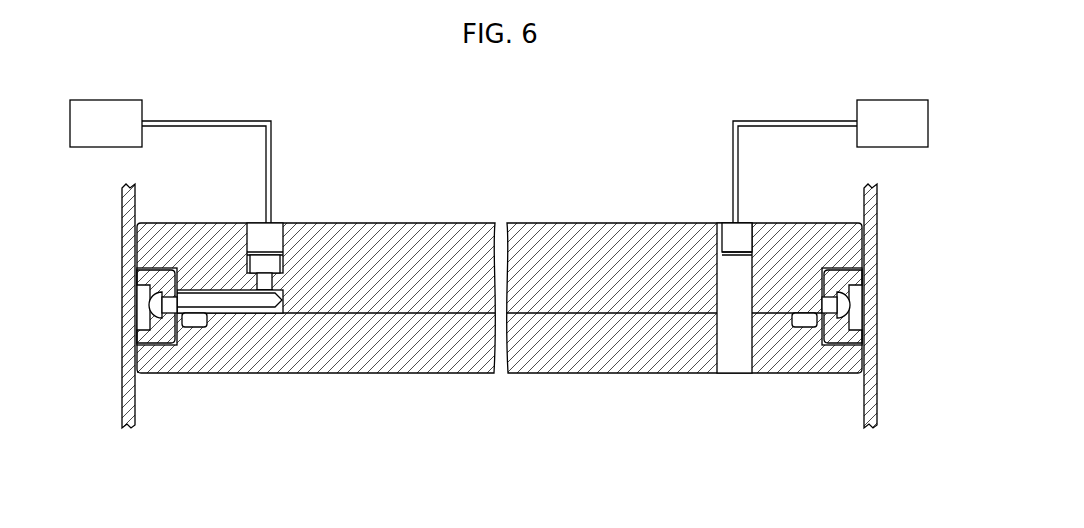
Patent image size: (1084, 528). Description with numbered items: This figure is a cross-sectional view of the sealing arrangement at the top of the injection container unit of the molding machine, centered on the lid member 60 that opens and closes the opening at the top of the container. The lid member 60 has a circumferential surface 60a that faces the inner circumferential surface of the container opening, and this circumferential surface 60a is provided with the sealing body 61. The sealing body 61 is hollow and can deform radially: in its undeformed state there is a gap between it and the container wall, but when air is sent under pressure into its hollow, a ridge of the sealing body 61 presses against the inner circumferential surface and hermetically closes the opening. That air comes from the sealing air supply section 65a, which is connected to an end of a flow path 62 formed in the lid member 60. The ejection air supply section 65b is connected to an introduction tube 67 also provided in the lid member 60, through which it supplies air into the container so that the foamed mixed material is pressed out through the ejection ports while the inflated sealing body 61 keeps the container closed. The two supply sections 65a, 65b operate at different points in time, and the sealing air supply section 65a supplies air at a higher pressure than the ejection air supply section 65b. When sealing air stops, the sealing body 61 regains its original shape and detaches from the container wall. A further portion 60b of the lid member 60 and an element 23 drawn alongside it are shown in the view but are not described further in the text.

The lid member 60 is at (676, 125).
The circumferential surface 60a is at (137, 253).
The lower member 60b is at (150, 287).
The sealing body 61 is at (140, 324).
The flow path 62 is at (235, 300).
The sealing air supply section 65a is at (106, 100).
The ejection air supply section 65b is at (891, 100).
The introduction tube 67 is at (737, 297).
The side wall 23 is at (125, 383).